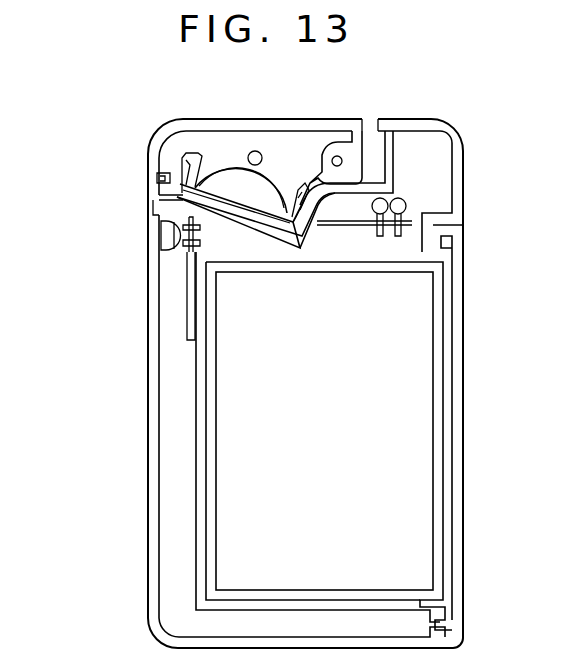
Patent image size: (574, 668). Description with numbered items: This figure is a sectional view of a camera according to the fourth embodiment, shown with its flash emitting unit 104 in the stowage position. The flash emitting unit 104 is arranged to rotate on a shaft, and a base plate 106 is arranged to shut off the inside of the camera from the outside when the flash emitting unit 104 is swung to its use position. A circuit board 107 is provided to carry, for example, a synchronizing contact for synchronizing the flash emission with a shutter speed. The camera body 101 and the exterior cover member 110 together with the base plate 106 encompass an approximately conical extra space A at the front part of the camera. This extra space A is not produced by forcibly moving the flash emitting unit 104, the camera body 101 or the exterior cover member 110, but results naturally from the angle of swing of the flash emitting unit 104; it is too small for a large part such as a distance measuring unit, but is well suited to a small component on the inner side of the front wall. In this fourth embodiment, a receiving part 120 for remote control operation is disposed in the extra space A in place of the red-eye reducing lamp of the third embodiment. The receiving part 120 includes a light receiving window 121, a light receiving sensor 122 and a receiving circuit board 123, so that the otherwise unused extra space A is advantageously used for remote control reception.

The camera body 101 is at (200, 437).
The flash emitting unit 104 is at (296, 157).
The base plate 106 is at (310, 233).
The circuit board 107 is at (413, 218).
The exterior cover member 110 is at (160, 494).
The receiving part 120 is at (112, 282).
The light receiving window 121 is at (153, 236).
The light receiving sensor 122 is at (180, 252).
The receiving circuit board 123 is at (139, 303).
The extra space A is at (242, 238).